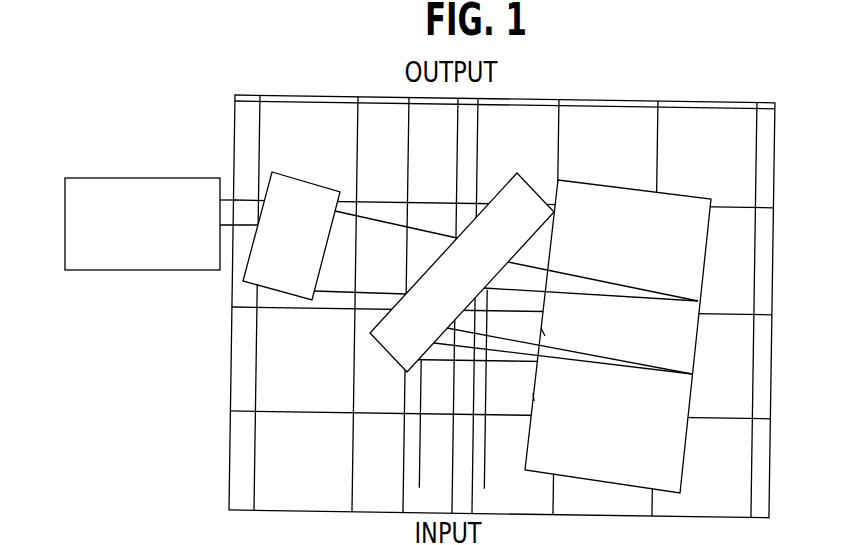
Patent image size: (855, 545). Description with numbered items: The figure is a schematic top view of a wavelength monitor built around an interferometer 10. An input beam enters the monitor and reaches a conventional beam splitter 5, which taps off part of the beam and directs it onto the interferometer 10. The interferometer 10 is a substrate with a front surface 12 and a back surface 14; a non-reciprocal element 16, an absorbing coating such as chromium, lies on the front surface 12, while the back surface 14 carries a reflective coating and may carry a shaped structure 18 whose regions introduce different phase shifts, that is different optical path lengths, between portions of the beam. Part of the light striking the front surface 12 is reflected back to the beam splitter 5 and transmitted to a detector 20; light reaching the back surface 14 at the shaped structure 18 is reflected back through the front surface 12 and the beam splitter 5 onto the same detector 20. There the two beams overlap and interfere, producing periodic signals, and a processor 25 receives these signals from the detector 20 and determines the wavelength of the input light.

The beam splitter 5 is at (461, 288).
The interferometer 10 is at (617, 244).
The front surface 12 is at (533, 397).
The back surface 14 is at (708, 262).
The non-reciprocal element 16 is at (541, 332).
The shaped structure 18 is at (698, 340).
The detector 20 is at (277, 244).
The processor 25 is at (133, 252).